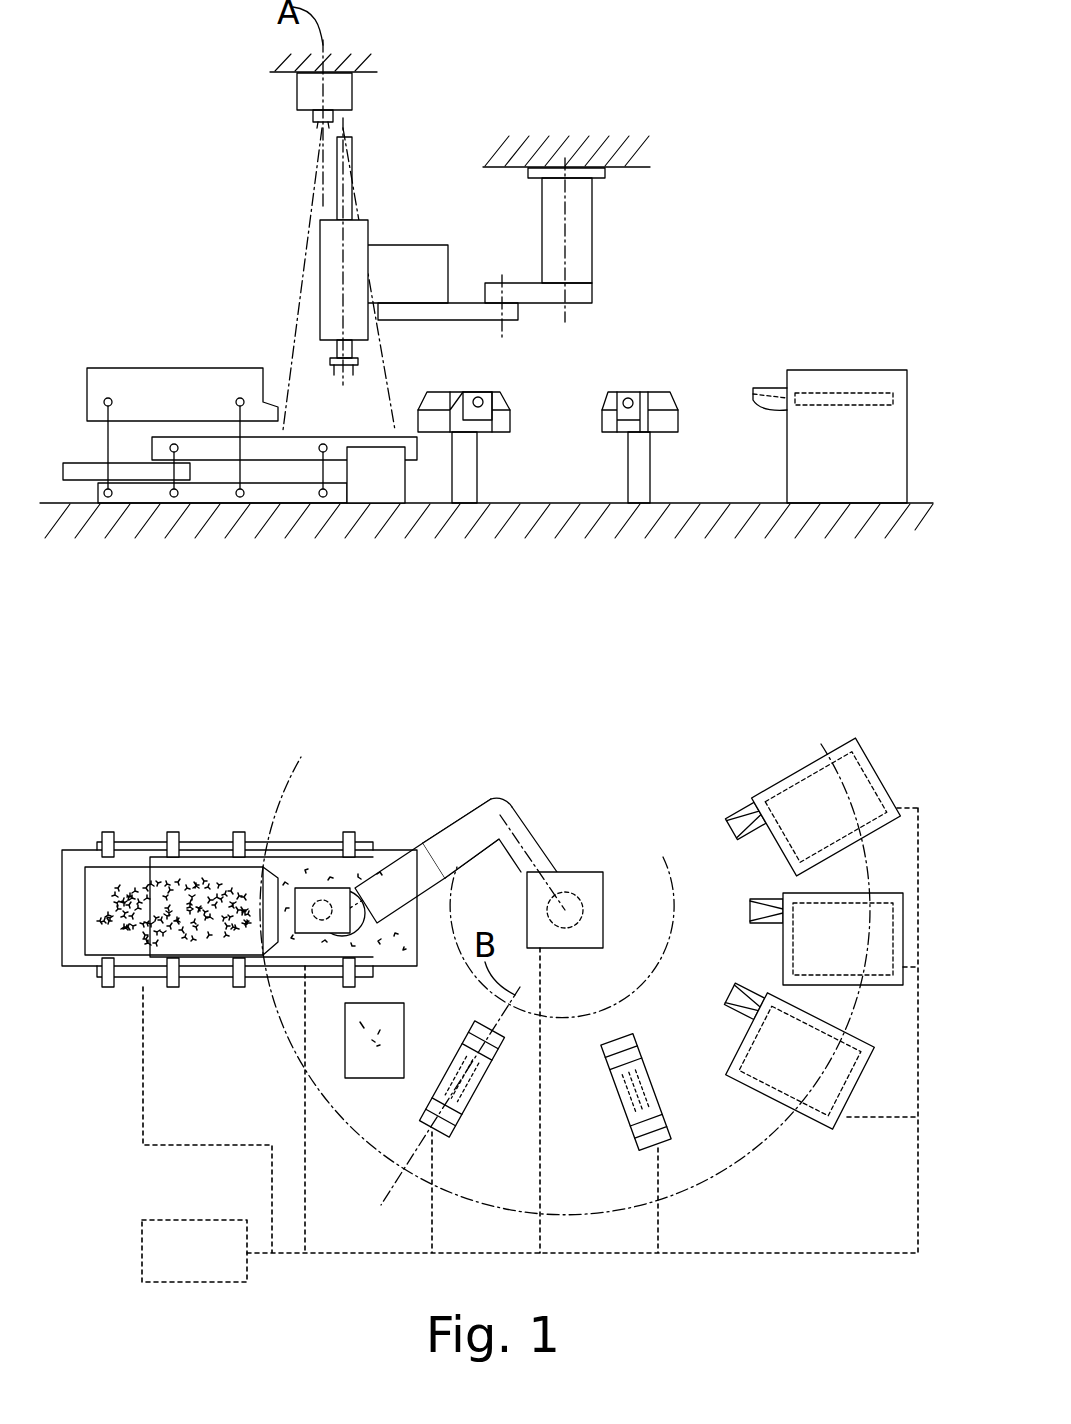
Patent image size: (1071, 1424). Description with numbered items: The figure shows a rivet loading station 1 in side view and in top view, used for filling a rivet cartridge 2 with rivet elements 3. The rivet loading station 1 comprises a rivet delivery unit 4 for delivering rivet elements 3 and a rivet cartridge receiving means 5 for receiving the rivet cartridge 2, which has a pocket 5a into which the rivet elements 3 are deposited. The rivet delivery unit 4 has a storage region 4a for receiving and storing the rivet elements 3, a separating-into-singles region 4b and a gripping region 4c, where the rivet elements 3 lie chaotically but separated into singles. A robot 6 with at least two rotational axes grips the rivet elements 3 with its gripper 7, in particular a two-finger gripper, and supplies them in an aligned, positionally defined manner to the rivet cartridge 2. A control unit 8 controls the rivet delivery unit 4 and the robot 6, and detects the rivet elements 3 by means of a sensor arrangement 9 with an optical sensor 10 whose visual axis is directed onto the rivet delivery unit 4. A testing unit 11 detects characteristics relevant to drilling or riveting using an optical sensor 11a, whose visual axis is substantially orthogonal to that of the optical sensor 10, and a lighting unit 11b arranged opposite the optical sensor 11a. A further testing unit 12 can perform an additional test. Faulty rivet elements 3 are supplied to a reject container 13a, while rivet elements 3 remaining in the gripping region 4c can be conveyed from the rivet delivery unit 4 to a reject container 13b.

The rivet loading station 1 is at (735, 111).
The rivet cartridge 2 is at (788, 690).
The rivet elements 3 is at (297, 880).
The rivet delivery unit 4 is at (231, 661).
The storage region 4a is at (147, 395).
The separating-into-singles region 4b is at (287, 450).
The gripping region 4c is at (342, 445).
The rivet cartridge receiving means 5 is at (868, 336).
The pocket 5a is at (737, 997).
The robot 6 is at (425, 168).
The gripper 7 is at (357, 373).
The control unit 8 is at (192, 1270).
The sensor arrangement 9 is at (240, 69).
The optical sensor 10 is at (308, 97).
The testing unit 11 is at (518, 374).
The optical sensor 11a is at (479, 407).
The lighting unit 11b is at (450, 1138).
The further testing unit 12 is at (659, 374).
The reject container 13a is at (378, 488).
The reject container 13b is at (75, 470).